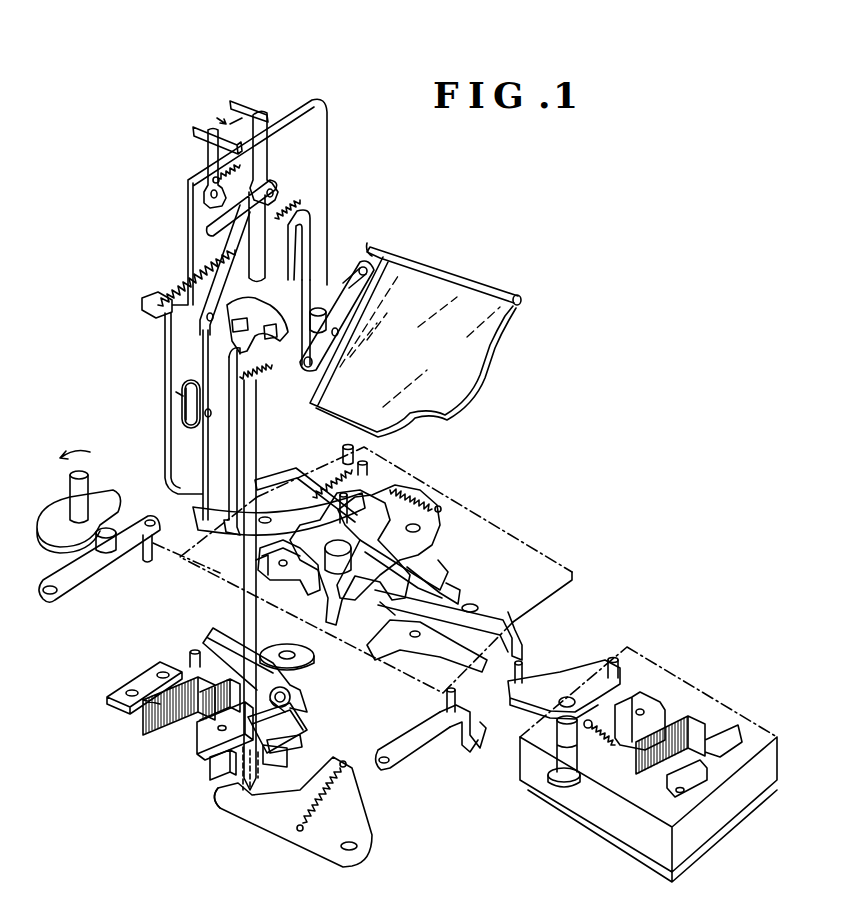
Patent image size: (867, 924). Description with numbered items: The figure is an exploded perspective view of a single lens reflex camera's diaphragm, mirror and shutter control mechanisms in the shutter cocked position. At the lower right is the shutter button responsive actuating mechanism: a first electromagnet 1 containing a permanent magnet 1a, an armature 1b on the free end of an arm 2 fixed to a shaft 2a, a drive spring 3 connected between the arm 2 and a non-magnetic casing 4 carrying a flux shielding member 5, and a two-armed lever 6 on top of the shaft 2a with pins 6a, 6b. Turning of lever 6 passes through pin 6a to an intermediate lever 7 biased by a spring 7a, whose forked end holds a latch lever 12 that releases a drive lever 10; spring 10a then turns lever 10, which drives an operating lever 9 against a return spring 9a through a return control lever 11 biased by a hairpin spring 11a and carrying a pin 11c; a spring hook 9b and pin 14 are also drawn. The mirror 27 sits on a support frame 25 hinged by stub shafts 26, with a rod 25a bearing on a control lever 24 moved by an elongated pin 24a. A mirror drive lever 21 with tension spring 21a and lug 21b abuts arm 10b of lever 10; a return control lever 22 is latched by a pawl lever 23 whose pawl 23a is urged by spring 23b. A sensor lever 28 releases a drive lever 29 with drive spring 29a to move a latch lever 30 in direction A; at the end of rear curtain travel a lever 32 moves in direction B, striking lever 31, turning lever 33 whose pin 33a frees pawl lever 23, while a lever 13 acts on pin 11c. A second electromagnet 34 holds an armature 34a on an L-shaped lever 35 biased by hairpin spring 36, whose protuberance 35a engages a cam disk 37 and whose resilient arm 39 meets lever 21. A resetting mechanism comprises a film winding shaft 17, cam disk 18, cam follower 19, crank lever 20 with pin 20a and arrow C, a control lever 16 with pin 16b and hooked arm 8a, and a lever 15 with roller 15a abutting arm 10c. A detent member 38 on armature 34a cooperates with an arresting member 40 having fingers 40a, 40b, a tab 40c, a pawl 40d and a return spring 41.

The first electromagnet 1 is at (713, 742).
The permanent magnet 1a is at (672, 790).
The armature 1b is at (642, 705).
The arm 2 is at (592, 765).
The shaft 2a is at (567, 777).
The drive spring 3 is at (598, 735).
The casing 4 is at (700, 828).
The magnetic flux shielding member 5 is at (605, 838).
The two-armed lever 6 is at (540, 680).
The pin 6a is at (522, 668).
The pin 6b is at (613, 660).
The intermediate lever 7 is at (490, 620).
The spring 7a is at (475, 612).
The hooked resilient arm 8a is at (455, 757).
The operating lever 9 is at (343, 600).
The return spring 9a is at (404, 497).
The spring hook 9b is at (436, 506).
The drive lever 10 is at (433, 542).
The spring 10a is at (330, 493).
The arm 10b is at (280, 478).
The arm 10c is at (438, 582).
The return control lever 11 is at (355, 518).
The hairpin spring 11a is at (265, 565).
The pin 11c is at (342, 488).
The latch lever 12 is at (297, 567).
The lever 13 is at (215, 525).
The pin 14 is at (354, 452).
The lever 15 is at (423, 643).
The roller 15a is at (380, 605).
The control lever 16 is at (390, 748).
The pin 16b is at (456, 705).
The film winding shaft 17 is at (89, 487).
The cam disk 18 is at (105, 500).
The cam follower 19 is at (112, 528).
The crank lever 20 is at (95, 575).
The pin 20a is at (149, 562).
The mirror drive lever 21 is at (293, 333).
The tension spring 21a is at (185, 288).
The lug 21b is at (312, 230).
The return control lever 22 is at (258, 308).
The pawl lever 23 is at (236, 425).
The pawl 23a is at (232, 353).
The spring 23b is at (265, 375).
The control lever 24 is at (345, 305).
The elongated pin 24a is at (300, 370).
The support frame 25 is at (370, 250).
The rod 25a is at (350, 272).
The stub shafts 26 is at (375, 247).
The mirror 27 is at (485, 352).
The sensor lever 28 is at (272, 205).
The drive lever 29 is at (210, 150).
The drive spring 29a is at (216, 180).
The latch lever 30 is at (207, 128).
The lever 31 is at (262, 160).
The lever 32 is at (248, 107).
The lever 33 is at (213, 340).
The pin 33a is at (178, 395).
The second electromagnet 34 is at (165, 735).
The armature 34a is at (200, 752).
The L-shaped lever 35 is at (303, 703).
The protuberance 35a is at (247, 640).
The hairpin spring 36 is at (195, 662).
The cam disk 37 is at (300, 664).
The detent member 38 is at (220, 772).
The resilient arm 39 is at (300, 730).
The arresting member 40 is at (320, 842).
The first finger 40a is at (225, 797).
The second finger 40b is at (302, 745).
The tab 40c is at (272, 767).
The pawl 40d is at (243, 800).
The return spring 41 is at (330, 787).
The direction arrow A is at (218, 108).
The direction arrow B is at (240, 124).
The direction C is at (75, 440).